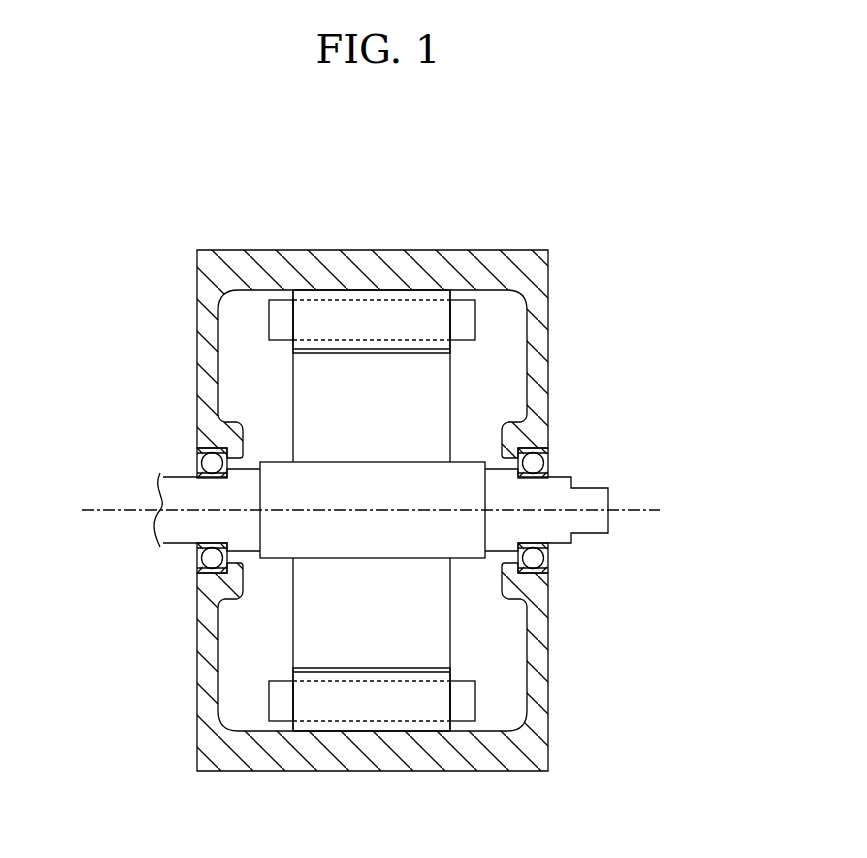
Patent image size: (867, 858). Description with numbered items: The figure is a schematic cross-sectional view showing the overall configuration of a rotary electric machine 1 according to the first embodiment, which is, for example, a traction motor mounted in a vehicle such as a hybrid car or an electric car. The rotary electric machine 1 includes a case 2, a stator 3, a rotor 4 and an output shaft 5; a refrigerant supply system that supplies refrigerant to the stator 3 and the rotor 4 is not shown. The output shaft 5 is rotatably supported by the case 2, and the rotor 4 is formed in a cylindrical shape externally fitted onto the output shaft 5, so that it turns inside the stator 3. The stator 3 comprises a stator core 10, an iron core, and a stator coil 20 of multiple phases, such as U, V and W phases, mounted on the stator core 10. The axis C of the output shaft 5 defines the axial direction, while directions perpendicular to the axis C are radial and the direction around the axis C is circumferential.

The rotary electric machine 1 is at (568, 228).
The case 2 is at (205, 281).
The stator 3 is at (417, 285).
The rotor 4 is at (435, 641).
The output shaft 5 is at (185, 535).
The stator core 10 is at (443, 330).
The stator coil 20 is at (274, 299).
The axis C is at (110, 508).